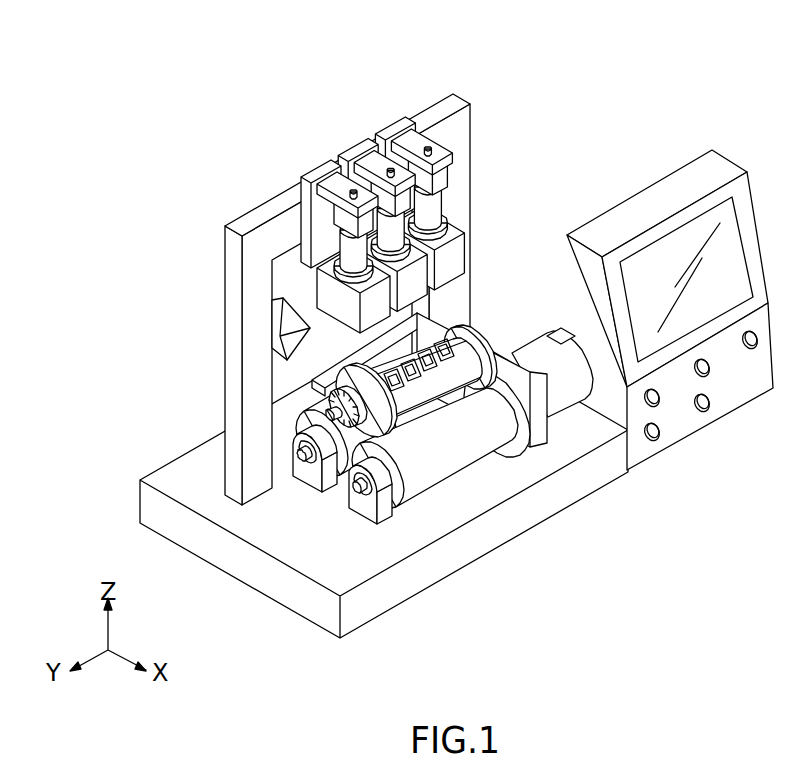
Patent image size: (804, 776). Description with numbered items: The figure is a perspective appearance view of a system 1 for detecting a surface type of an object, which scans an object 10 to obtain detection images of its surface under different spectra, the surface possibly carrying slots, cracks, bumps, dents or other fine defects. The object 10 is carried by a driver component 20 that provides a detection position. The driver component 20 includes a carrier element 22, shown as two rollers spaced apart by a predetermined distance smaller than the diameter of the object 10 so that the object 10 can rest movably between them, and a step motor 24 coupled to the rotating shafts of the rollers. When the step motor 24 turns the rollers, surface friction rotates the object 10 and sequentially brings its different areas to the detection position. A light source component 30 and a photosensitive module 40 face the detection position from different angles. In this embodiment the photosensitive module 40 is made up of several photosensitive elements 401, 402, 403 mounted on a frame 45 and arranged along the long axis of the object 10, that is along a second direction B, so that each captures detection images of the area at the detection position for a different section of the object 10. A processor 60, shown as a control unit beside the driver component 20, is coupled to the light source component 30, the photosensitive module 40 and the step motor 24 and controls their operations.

The system for detecting a surface type of an object 1 is at (93, 92).
The object 10 is at (422, 455).
The driver component 20 is at (433, 489).
The carrier element 22 is at (300, 463).
The step motor 24 is at (562, 402).
The light source component 30 is at (282, 334).
The photosensitive module 40 is at (381, 175).
The photosensitive element 401 is at (325, 290).
The photosensitive element 402 is at (400, 275).
The photosensitive element 403 is at (460, 245).
The frame 45 is at (268, 215).
The processor 60 is at (675, 418).
The second direction B is at (430, 333).